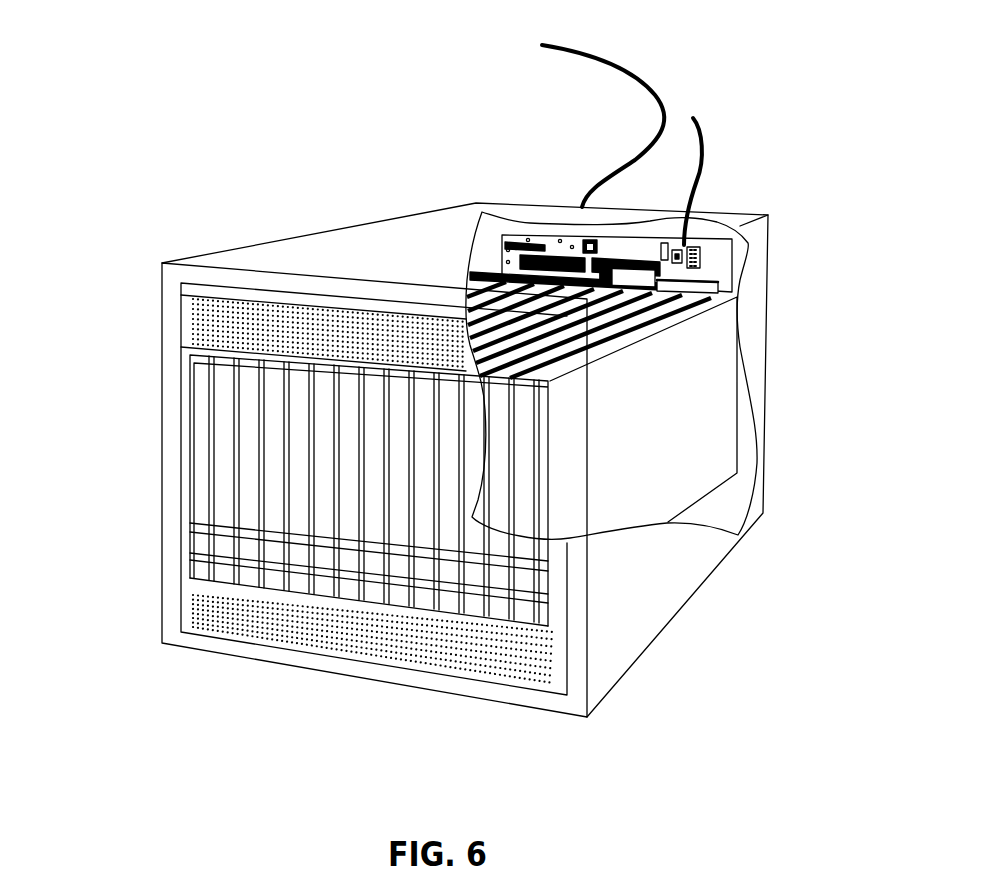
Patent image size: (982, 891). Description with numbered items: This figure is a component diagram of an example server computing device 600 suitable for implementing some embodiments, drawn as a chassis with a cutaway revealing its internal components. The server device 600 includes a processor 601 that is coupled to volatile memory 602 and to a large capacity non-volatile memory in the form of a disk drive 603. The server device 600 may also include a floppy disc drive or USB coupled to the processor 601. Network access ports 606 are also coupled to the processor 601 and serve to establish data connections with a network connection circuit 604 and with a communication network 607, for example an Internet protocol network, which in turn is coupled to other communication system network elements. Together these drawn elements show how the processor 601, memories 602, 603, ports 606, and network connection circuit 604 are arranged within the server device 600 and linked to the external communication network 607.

The server computing device 600 is at (347, 222).
The processor 601 is at (632, 255).
The volatile memory 602 is at (723, 280).
The disk drive 603 is at (250, 422).
The network connection circuit 604 is at (222, 458).
The network access ports 606 is at (487, 277).
The communication network 607 is at (663, 103).